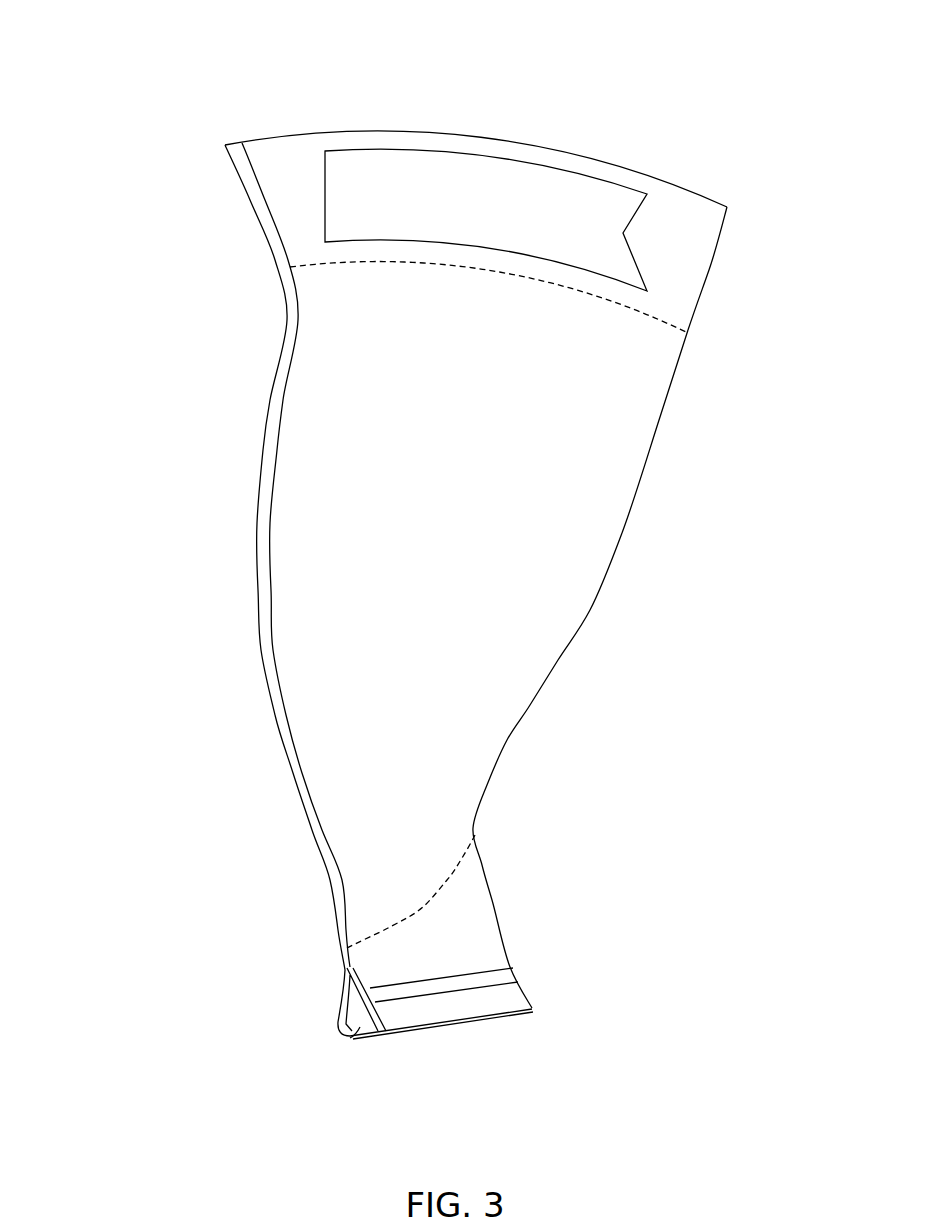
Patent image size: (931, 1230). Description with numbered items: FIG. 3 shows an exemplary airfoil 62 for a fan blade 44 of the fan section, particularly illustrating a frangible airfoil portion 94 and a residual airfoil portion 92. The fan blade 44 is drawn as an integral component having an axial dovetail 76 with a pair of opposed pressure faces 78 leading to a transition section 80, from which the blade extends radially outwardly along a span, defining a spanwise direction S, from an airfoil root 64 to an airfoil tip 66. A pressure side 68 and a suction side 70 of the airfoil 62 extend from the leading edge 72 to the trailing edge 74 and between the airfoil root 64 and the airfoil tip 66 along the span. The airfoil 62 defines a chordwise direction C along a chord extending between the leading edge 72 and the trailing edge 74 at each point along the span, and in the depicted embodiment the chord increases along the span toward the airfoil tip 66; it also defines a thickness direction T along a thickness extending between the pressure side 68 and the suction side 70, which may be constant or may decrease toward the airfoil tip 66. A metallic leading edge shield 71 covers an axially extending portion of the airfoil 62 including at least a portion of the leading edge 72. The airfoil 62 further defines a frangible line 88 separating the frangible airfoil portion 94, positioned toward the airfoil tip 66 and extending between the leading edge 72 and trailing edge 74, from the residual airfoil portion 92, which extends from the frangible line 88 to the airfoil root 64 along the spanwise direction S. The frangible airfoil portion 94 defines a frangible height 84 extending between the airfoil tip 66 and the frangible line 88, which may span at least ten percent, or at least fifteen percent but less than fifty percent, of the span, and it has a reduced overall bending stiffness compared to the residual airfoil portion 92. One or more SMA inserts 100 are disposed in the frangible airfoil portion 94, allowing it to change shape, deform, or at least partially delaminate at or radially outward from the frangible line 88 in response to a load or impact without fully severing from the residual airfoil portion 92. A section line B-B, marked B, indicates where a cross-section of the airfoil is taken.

The fan blade 44 is at (605, 122).
The airfoil tip 66 is at (500, 137).
The SMA insert 100 is at (632, 197).
The frangible airfoil portion 94 is at (698, 258).
The residual airfoil portion 92 is at (633, 423).
The trailing edge 74 is at (627, 533).
The metallic leading edge shield 71 is at (290, 337).
The suction side 70 is at (297, 485).
The leading edge 72 is at (257, 635).
The airfoil 62 is at (310, 747).
The frangible line 88 is at (398, 263).
The pressure side 68 is at (435, 502).
The airfoil root 64 is at (443, 880).
The transition section 80 is at (480, 937).
The pressure faces 78 is at (340, 1002).
The axial dovetail 76 is at (360, 1027).
The frangible height 84 is at (135, 145).
The chordwise direction C is at (727, 30).
The thickness direction T is at (368, 72).
The spanwise direction S is at (75, 312).
The section line B- B is at (473, 302).